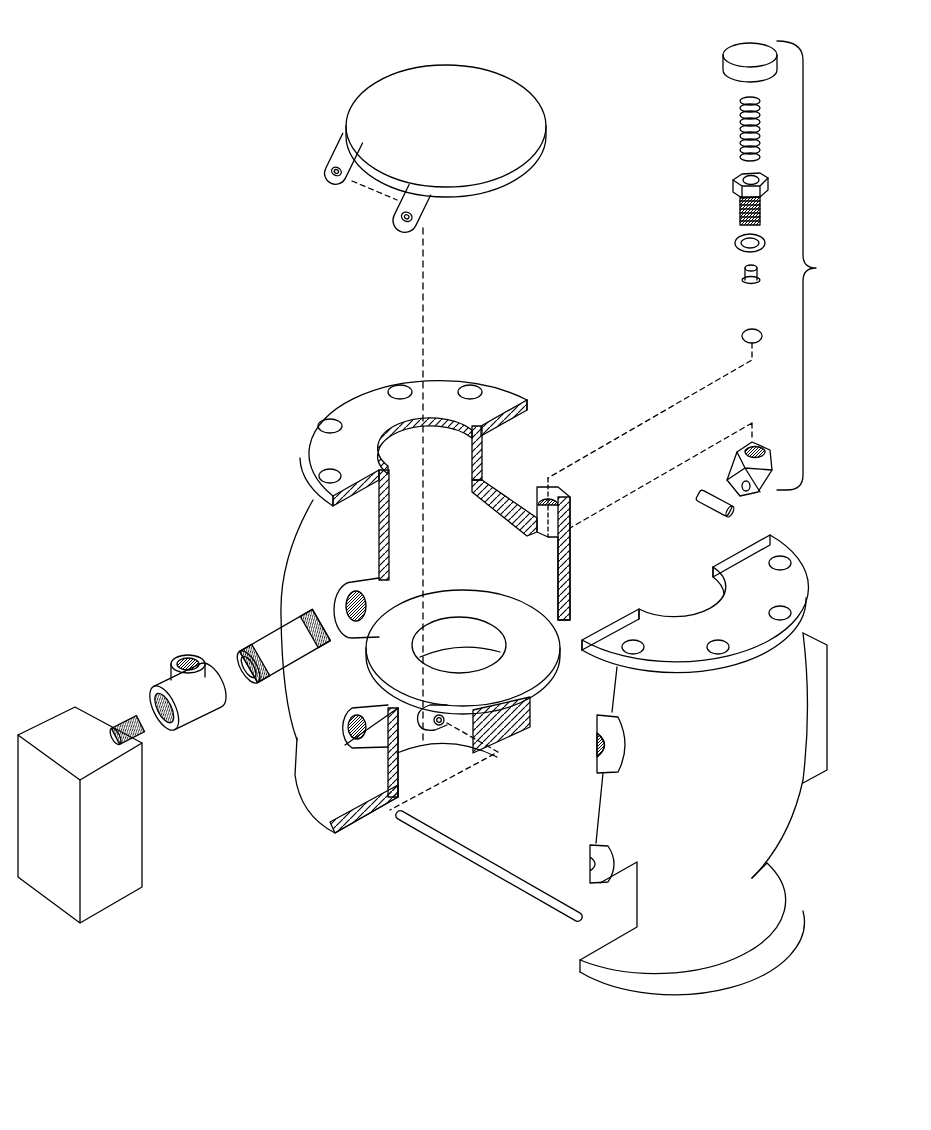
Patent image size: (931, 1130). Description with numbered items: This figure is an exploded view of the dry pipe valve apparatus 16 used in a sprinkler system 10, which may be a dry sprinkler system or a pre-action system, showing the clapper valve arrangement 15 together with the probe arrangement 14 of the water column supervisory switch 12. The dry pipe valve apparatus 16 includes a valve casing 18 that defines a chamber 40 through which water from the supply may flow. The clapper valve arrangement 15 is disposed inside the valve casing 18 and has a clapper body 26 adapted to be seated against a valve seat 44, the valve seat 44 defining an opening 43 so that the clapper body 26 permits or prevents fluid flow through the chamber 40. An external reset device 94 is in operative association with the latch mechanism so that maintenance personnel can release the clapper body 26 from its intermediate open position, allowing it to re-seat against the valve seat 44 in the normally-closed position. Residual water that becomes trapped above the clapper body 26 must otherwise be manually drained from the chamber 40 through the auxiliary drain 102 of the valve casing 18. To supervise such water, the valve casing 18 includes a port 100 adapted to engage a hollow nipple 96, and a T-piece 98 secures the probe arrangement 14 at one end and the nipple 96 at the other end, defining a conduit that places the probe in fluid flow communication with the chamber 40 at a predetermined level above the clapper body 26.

The sprinkler system 10 is at (193, 363).
The water column supervisory switch 12 is at (174, 777).
The probe arrangement 14 is at (115, 902).
The clapper valve arrangement 15 is at (455, 372).
The dry pipe valve apparatus 16 is at (396, 567).
The valve casing 18 is at (300, 543).
The clapper body 26 is at (507, 157).
The chamber 40 is at (447, 517).
The opening 43 is at (472, 657).
The valve seat 44 is at (492, 745).
The external reset device 94 is at (706, 284).
The hollow nipple 96 is at (258, 643).
The T-piece 98 is at (188, 723).
The port 100 is at (330, 612).
The auxiliary drain 102 is at (335, 724).